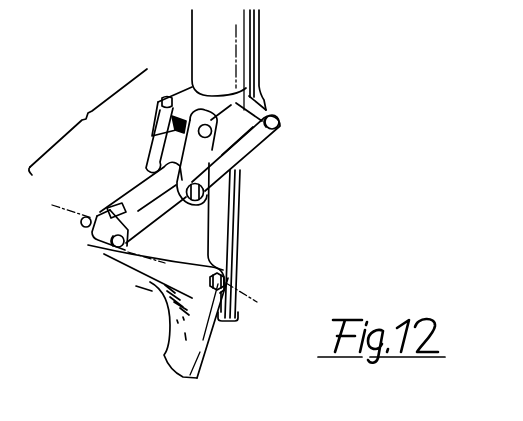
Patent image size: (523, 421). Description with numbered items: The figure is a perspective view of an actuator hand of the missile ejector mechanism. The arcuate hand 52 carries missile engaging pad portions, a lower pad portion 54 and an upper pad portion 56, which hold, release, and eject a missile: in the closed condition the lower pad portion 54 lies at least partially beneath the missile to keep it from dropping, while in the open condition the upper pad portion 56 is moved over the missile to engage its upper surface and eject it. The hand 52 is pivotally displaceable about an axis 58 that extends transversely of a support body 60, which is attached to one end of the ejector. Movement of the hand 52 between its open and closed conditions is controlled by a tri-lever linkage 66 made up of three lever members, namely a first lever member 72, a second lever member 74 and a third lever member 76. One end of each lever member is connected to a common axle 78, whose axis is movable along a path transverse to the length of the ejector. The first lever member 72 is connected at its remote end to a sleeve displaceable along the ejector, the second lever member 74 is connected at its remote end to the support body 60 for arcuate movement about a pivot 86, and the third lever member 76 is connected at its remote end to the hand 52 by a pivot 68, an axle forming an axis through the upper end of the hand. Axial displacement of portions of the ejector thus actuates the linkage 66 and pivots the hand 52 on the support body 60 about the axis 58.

The hand 52 is at (221, 344).
The lower pad portion 54 is at (160, 348).
The upper pad portion 56 is at (150, 283).
The axis 58 is at (270, 306).
The support body 60 is at (233, 242).
The tri-lever linkage 66 is at (88, 122).
The pivot 68 is at (83, 216).
The first lever member 72 is at (160, 130).
The second lever member 74 is at (249, 146).
The third lever member 76 is at (127, 197).
The axle 78 is at (203, 196).
The pivot 86 is at (281, 123).